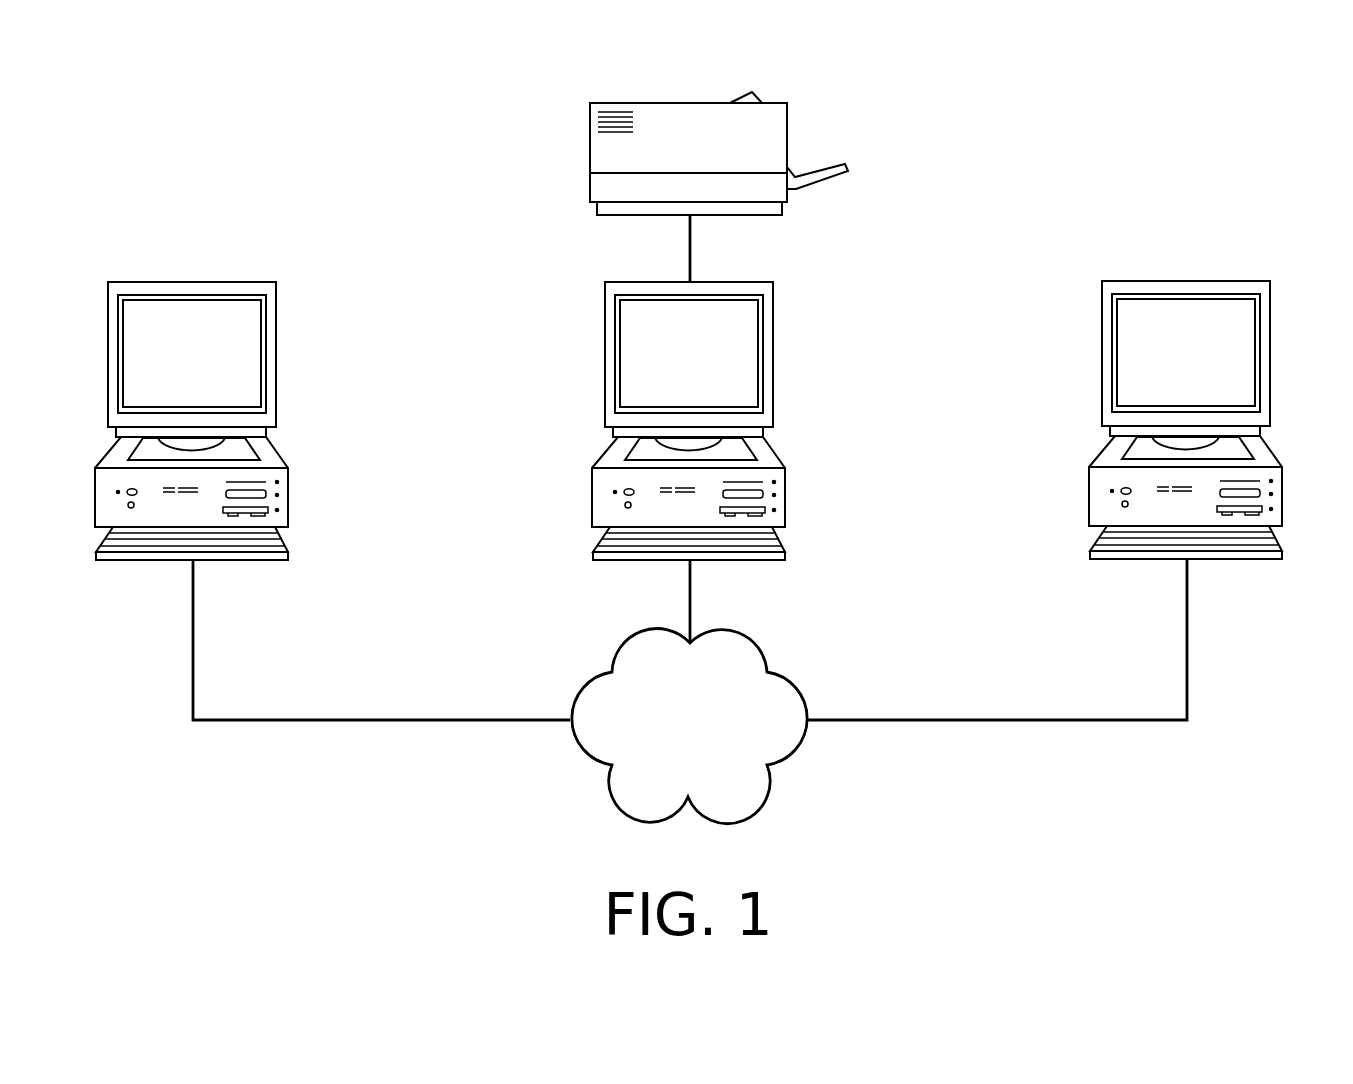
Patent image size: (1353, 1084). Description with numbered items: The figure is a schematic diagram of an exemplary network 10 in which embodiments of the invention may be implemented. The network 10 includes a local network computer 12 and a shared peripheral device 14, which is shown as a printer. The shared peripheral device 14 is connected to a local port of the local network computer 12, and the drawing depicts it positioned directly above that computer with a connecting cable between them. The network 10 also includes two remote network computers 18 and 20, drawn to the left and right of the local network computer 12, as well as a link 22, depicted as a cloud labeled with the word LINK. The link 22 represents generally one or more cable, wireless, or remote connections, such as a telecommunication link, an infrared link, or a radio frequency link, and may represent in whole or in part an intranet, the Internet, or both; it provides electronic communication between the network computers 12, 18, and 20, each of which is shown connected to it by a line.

The network 10 is at (1143, 148).
The local network computer 12 is at (743, 287).
The shared peripheral device 14 is at (672, 110).
The remote network computer 18 is at (247, 287).
The remote network computer 20 is at (1240, 285).
The link 22 is at (635, 653).